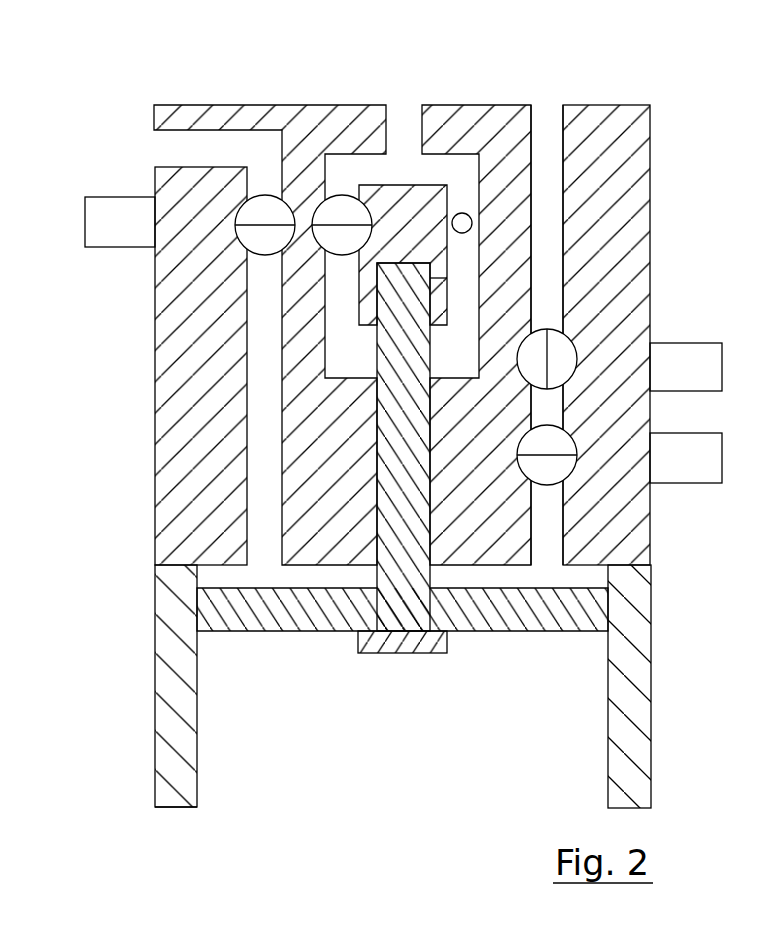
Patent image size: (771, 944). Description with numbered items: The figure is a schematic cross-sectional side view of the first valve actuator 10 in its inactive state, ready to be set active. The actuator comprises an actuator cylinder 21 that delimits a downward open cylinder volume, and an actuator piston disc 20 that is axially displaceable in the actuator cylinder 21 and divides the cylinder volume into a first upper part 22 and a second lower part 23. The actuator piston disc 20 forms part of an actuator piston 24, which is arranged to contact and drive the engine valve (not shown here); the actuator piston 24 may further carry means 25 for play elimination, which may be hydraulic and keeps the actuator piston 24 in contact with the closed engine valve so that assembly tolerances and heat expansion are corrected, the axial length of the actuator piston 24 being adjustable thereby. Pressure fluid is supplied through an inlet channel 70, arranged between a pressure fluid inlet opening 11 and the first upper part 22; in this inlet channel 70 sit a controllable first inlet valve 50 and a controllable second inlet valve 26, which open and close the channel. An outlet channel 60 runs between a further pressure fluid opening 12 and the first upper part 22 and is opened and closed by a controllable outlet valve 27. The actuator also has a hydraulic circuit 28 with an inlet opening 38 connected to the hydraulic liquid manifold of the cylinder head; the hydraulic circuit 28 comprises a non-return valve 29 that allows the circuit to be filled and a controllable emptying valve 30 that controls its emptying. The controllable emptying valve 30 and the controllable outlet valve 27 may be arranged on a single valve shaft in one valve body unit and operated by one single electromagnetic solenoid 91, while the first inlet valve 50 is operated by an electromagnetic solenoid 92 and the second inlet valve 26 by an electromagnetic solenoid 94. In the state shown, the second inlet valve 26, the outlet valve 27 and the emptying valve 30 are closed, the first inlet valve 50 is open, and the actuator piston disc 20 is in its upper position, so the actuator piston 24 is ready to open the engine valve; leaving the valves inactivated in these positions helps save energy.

The first valve actuator 10 is at (688, 147).
The pressure fluid inlet opening 11 is at (547, 117).
The pressure fluid inlet opening 12 is at (182, 150).
The actuator piston disc 20 is at (585, 607).
The actuator cylinder 21 is at (625, 693).
The first upper part 22 is at (210, 582).
The second lower part 23 is at (227, 783).
The actuator piston 24 is at (483, 644).
The means for play elimination 25 is at (393, 643).
The controllable second inlet valve 26 is at (575, 482).
The controllable outlet valve 27 is at (243, 243).
The hydraulic circuit 28 is at (402, 110).
The non-return valve 29 is at (462, 212).
The controllable emptying valve 30 is at (327, 224).
The inlet opening 38 is at (393, 107).
The controllable first inlet valve 50 is at (573, 380).
The outlet channel 60 is at (272, 340).
The inlet channel 70 is at (547, 268).
The electromagnetic solenoid 91 is at (132, 224).
The electromagnetic solenoid 92 is at (662, 362).
The electromagnetic solenoid 94 is at (700, 458).